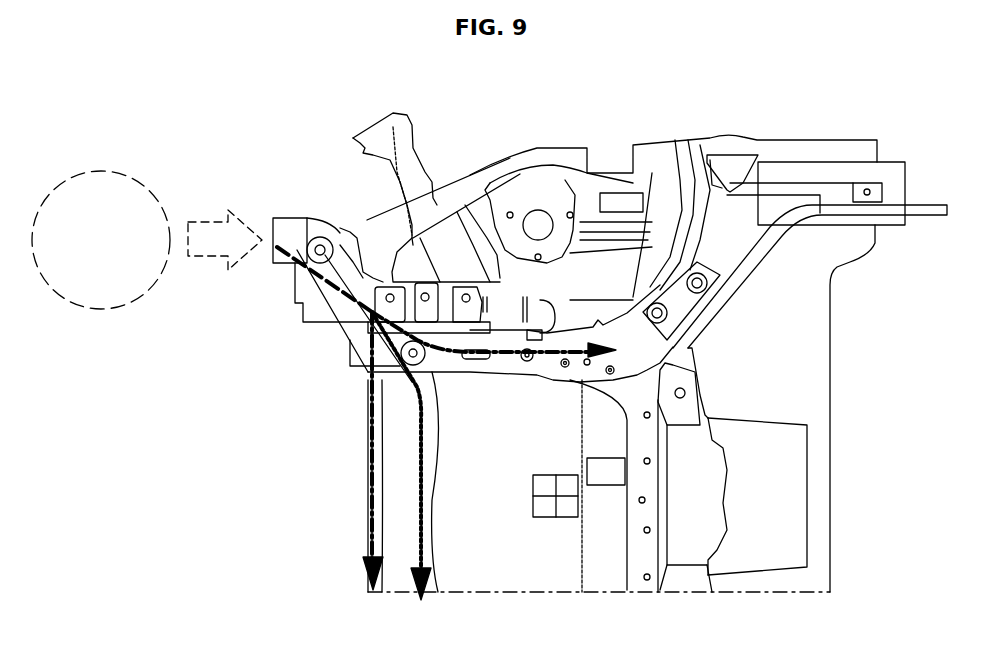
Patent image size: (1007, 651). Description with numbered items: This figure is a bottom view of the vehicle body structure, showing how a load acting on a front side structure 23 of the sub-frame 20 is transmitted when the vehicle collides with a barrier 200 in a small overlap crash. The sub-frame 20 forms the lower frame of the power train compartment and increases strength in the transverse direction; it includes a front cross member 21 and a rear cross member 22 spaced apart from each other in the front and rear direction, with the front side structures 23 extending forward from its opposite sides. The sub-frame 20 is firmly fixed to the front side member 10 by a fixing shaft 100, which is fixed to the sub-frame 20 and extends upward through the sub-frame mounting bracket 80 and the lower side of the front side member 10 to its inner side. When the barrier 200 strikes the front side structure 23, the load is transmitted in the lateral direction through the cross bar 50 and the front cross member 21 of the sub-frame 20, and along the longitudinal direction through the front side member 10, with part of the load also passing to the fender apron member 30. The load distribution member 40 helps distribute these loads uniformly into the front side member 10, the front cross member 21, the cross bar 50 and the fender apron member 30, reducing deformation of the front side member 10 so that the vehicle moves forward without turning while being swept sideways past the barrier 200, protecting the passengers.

The front side member 10 is at (565, 310).
The sub-frame 20 is at (338, 378).
The front cross member 21 is at (392, 542).
The rear cross member 22 is at (630, 548).
The front side structure 23 is at (295, 228).
The fender apron member 30 is at (457, 198).
The load distribution member 40 is at (380, 228).
The cross bar 50 is at (370, 470).
The sub-frame mounting bracket 80 is at (400, 328).
The fixing shaft 100 is at (370, 312).
The barrier 200 is at (68, 174).